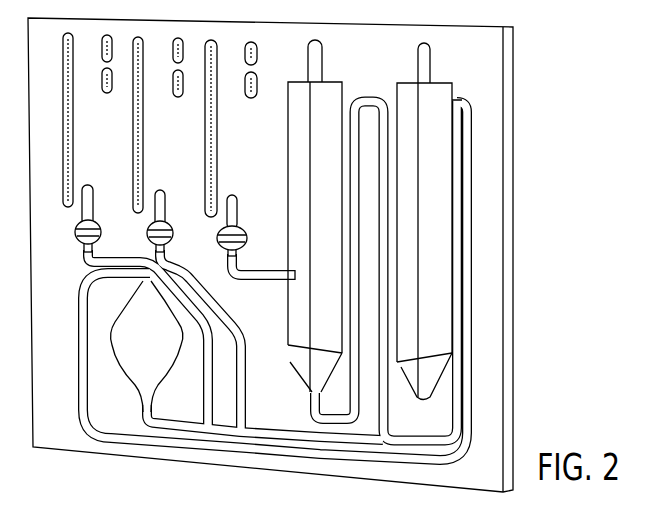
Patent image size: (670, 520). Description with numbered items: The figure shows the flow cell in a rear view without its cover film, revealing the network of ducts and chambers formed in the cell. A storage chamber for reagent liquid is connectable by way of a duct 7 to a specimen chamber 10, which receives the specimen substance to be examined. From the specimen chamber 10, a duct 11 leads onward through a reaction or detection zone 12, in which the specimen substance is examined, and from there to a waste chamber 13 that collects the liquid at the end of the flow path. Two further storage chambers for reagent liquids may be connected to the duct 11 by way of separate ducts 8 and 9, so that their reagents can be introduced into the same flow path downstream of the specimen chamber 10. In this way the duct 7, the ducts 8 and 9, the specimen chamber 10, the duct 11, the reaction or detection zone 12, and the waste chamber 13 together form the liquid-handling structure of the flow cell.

The duct 7 is at (250, 277).
The duct 8 is at (272, 387).
The duct 9 is at (105, 258).
The specimen chamber 10 is at (327, 101).
The duct 11 is at (388, 417).
The reaction or detection zone 12 is at (150, 344).
The waste chamber 13 is at (430, 101).